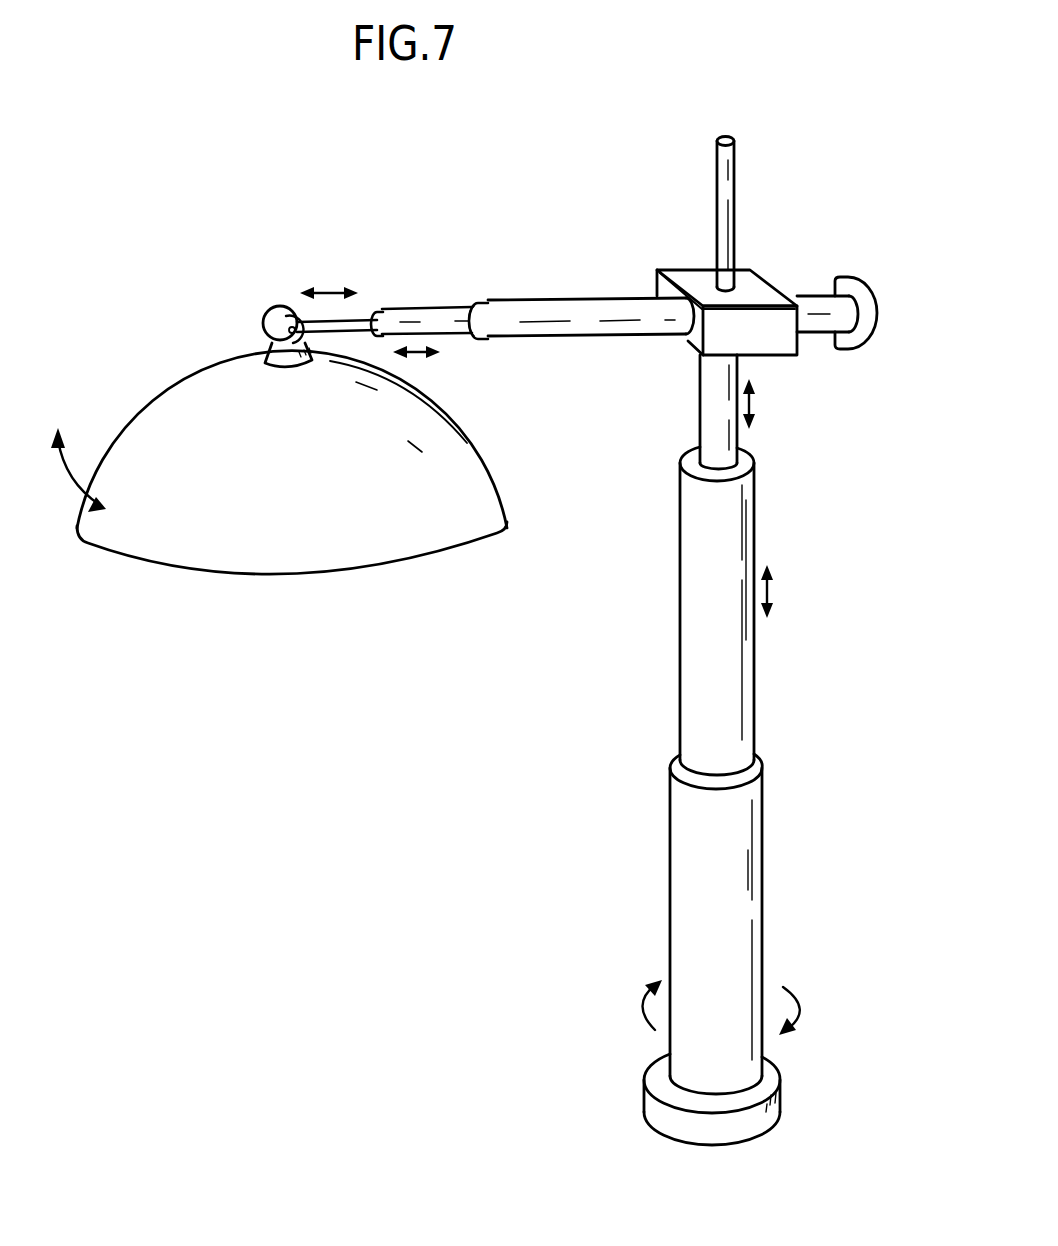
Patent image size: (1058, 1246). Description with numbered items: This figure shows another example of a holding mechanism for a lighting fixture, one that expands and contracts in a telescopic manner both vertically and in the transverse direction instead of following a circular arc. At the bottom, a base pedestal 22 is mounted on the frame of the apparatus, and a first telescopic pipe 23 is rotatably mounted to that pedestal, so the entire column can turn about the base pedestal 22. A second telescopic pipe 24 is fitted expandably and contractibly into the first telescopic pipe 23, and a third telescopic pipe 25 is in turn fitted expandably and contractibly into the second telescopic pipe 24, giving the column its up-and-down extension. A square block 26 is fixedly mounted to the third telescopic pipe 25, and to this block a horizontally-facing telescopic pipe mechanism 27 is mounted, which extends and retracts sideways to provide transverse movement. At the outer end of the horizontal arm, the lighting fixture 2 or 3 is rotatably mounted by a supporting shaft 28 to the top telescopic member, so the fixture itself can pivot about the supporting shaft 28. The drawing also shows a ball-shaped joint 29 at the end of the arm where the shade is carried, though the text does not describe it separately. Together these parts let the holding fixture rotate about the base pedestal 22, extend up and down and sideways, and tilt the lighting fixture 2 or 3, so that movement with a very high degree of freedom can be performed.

The lighting fixture 2 is at (279, 499).
The lighting fixture 3 is at (193, 565).
The base pedestal 22 is at (752, 1125).
The first telescopic pipe 23 is at (733, 927).
The second telescopic pipe 24 is at (717, 683).
The third telescopic pipe 25 is at (727, 440).
The square block 26 is at (755, 278).
The horizontally-facing telescopic pipe mechanism 27 is at (538, 300).
The supporting shaft 28 is at (362, 318).
The ball joint 29 is at (290, 311).